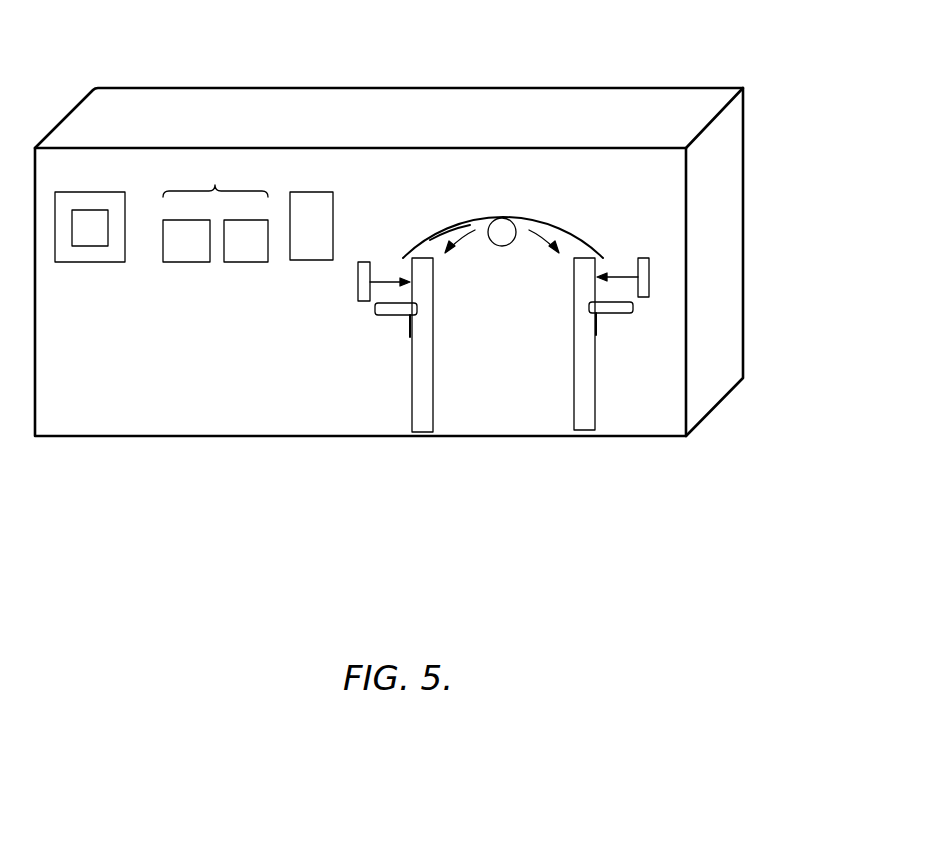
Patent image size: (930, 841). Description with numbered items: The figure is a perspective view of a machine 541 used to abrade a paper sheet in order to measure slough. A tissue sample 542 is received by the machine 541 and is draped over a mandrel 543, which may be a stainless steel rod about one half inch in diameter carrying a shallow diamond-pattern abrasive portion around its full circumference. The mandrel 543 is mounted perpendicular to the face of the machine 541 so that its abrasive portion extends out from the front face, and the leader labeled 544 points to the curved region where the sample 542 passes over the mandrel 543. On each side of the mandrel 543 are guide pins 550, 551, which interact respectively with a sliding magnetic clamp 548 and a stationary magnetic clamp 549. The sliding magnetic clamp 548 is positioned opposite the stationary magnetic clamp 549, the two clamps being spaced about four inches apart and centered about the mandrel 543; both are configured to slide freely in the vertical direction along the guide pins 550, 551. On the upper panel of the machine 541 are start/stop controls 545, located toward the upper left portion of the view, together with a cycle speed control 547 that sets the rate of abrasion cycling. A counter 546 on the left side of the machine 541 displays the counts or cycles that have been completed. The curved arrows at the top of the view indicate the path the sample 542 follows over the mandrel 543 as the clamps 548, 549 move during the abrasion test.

The machine 541 is at (768, 150).
The tissue sample 542 is at (569, 222).
The mandrel 543 is at (518, 217).
The track surface 544 is at (461, 220).
The start/stop controls 545 is at (215, 183).
The counter 546 is at (87, 182).
The cycle speed control 547 is at (305, 245).
The sliding magnetic clamp 548 is at (362, 293).
The stationary magnetic clamp 549 is at (643, 297).
The guide pin 550 is at (396, 315).
The guide pin 551 is at (605, 312).